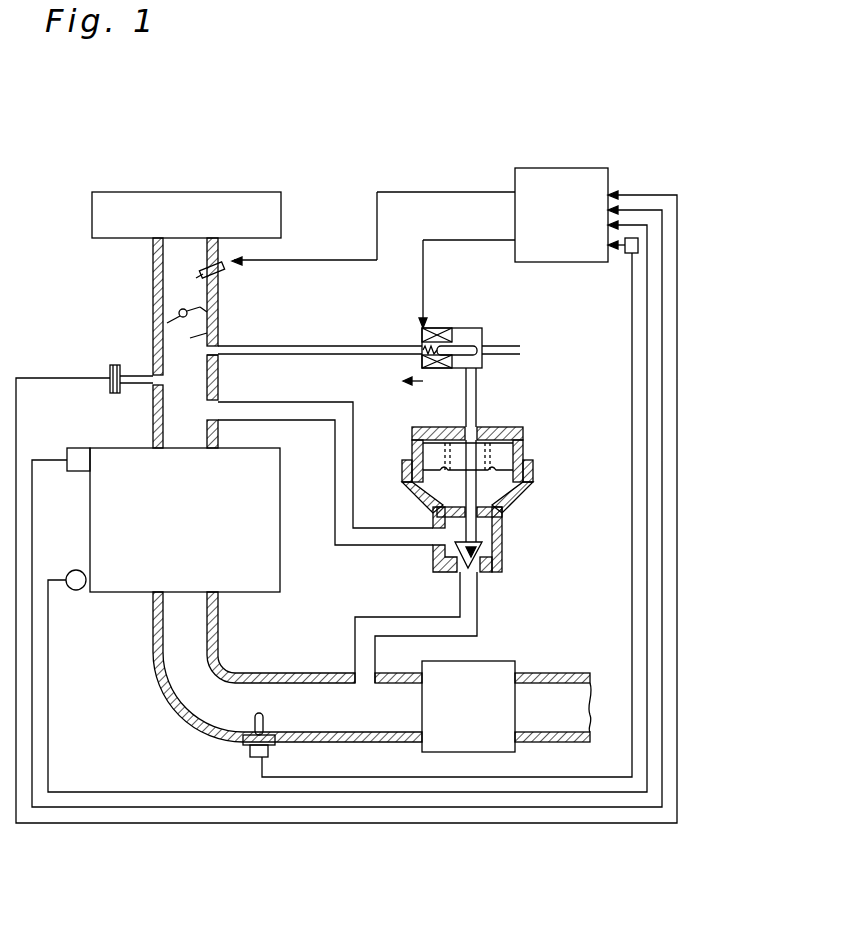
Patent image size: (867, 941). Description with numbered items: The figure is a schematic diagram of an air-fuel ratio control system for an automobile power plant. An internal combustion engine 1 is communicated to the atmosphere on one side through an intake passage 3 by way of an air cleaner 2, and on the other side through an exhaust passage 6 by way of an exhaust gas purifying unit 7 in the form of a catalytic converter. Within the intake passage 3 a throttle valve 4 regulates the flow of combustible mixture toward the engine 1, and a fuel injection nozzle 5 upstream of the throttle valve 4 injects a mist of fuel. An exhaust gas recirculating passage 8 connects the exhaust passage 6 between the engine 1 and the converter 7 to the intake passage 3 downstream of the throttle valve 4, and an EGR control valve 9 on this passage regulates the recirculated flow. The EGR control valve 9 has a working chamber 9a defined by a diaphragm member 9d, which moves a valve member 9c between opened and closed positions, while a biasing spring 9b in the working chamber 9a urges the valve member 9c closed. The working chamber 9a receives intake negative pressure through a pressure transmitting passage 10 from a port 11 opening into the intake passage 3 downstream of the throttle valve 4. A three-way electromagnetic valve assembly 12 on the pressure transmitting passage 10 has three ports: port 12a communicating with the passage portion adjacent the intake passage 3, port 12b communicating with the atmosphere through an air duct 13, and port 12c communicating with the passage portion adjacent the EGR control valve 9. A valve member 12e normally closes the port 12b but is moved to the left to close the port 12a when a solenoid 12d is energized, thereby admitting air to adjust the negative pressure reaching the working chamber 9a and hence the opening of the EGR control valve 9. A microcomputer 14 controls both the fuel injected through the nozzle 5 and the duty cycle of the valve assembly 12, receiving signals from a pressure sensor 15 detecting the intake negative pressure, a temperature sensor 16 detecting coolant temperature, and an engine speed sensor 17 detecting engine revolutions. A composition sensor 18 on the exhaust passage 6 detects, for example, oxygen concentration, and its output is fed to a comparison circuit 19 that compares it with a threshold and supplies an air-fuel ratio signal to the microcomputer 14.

The internal combustion engine 1 is at (196, 538).
The air cleaner 2 is at (186, 192).
The intake passage 3 is at (192, 337).
The throttle valve 4 is at (205, 308).
The fuel injection nozzle 5 is at (233, 266).
The exhaust passage 6 is at (180, 700).
The exhaust gas purifying unit 7 is at (505, 661).
The exhaust gas recirculating passage 8 is at (333, 546).
The EGR control valve 9 is at (481, 480).
The working chamber 9a is at (505, 455).
The biasing spring 9b is at (445, 447).
The valve member 9c is at (478, 548).
The diaphragm member 9d is at (420, 462).
The pressure transmitting passage 10 is at (322, 346).
The port 11 is at (220, 352).
The three-way electromagnetic valve assembly 12 is at (436, 345).
The port 12a is at (420, 346).
The port 12b is at (482, 348).
The port 12c is at (478, 372).
The solenoid 12d is at (420, 364).
The valve member 12e is at (472, 350).
The air duct 13 is at (505, 355).
The microcomputer 14 is at (555, 168).
The pressure sensor 15 is at (110, 368).
The temperature sensor 16 is at (82, 448).
The engine speed sensor 17 is at (70, 570).
The composition sensor 18 is at (245, 748).
The comparison circuit 19 is at (628, 255).